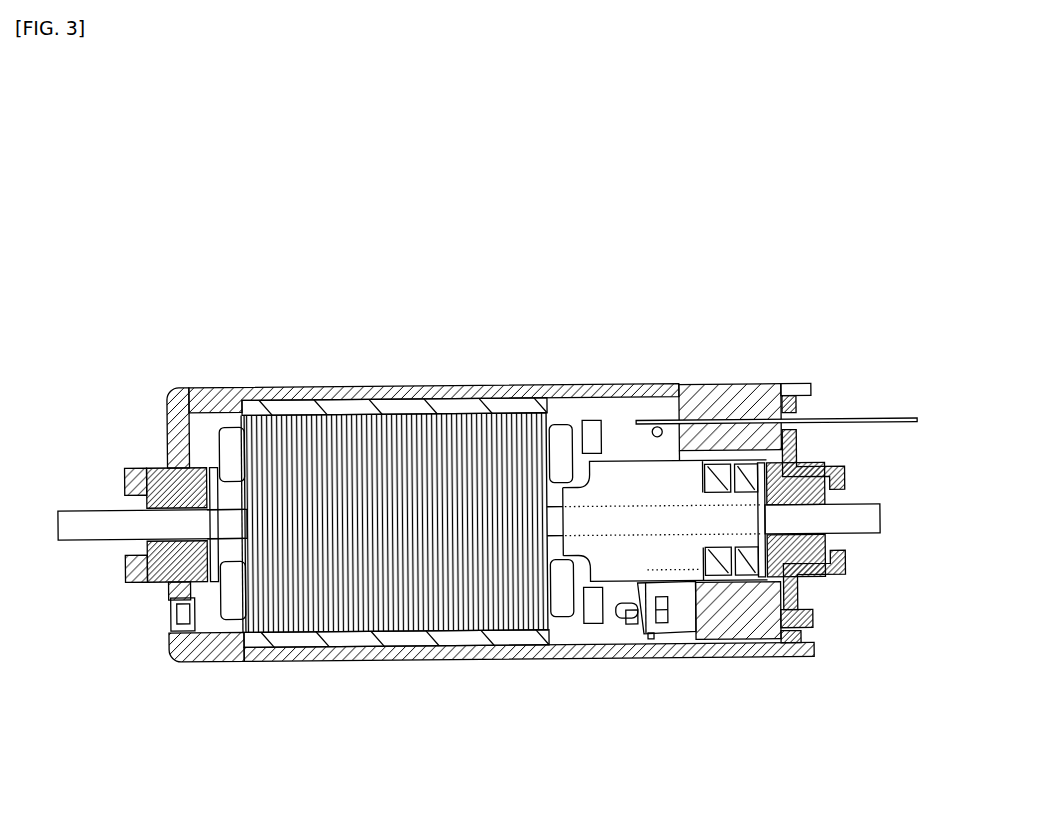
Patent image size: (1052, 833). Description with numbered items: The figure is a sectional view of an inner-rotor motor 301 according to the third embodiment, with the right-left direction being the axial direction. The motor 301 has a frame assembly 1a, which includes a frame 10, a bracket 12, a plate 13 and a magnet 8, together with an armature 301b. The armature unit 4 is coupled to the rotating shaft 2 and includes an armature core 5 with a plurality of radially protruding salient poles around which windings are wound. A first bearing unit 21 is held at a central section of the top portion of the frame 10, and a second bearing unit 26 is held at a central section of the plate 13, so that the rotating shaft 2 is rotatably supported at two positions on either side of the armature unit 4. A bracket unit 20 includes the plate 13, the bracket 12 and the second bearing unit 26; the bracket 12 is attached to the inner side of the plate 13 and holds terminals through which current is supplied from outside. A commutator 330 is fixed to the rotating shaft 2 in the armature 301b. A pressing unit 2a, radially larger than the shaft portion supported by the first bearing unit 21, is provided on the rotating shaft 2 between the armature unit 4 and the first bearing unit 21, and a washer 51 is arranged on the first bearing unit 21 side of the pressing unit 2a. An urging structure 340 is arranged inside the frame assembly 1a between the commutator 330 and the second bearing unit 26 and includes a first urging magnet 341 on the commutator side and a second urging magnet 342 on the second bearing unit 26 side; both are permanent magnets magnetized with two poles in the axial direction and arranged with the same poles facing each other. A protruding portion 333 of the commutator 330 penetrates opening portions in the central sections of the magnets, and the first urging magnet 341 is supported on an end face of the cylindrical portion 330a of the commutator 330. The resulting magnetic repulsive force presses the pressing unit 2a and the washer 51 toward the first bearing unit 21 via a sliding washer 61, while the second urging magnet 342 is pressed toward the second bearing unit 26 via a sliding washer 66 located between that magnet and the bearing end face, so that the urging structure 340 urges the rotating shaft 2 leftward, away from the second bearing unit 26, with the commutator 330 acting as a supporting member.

The inner-rotor motor 301 is at (208, 185).
The armature 301b is at (110, 547).
The frame assembly 1a is at (430, 375).
The rotating shaft 2 is at (84, 505).
The pressing unit 2a is at (225, 528).
The armature unit 4 is at (208, 418).
The armature core 5 is at (340, 397).
The magnet 8 is at (505, 408).
The frame 10 is at (366, 659).
The bracket 12 is at (742, 395).
The plate 13 is at (847, 470).
The bracket unit 20 is at (823, 437).
The first bearing unit 21 is at (172, 554).
The second bearing unit 26 is at (813, 570).
The washer 51 is at (213, 580).
The sliding washer 61 is at (186, 612).
The sliding washer 66 is at (813, 647).
The commutator 330 is at (611, 596).
The cylindrical portion 330a is at (637, 477).
The protruding portion 333 is at (738, 508).
The urging structure 340 is at (749, 621).
The first urging magnet 341 is at (722, 574).
The second urging magnet 342 is at (752, 576).